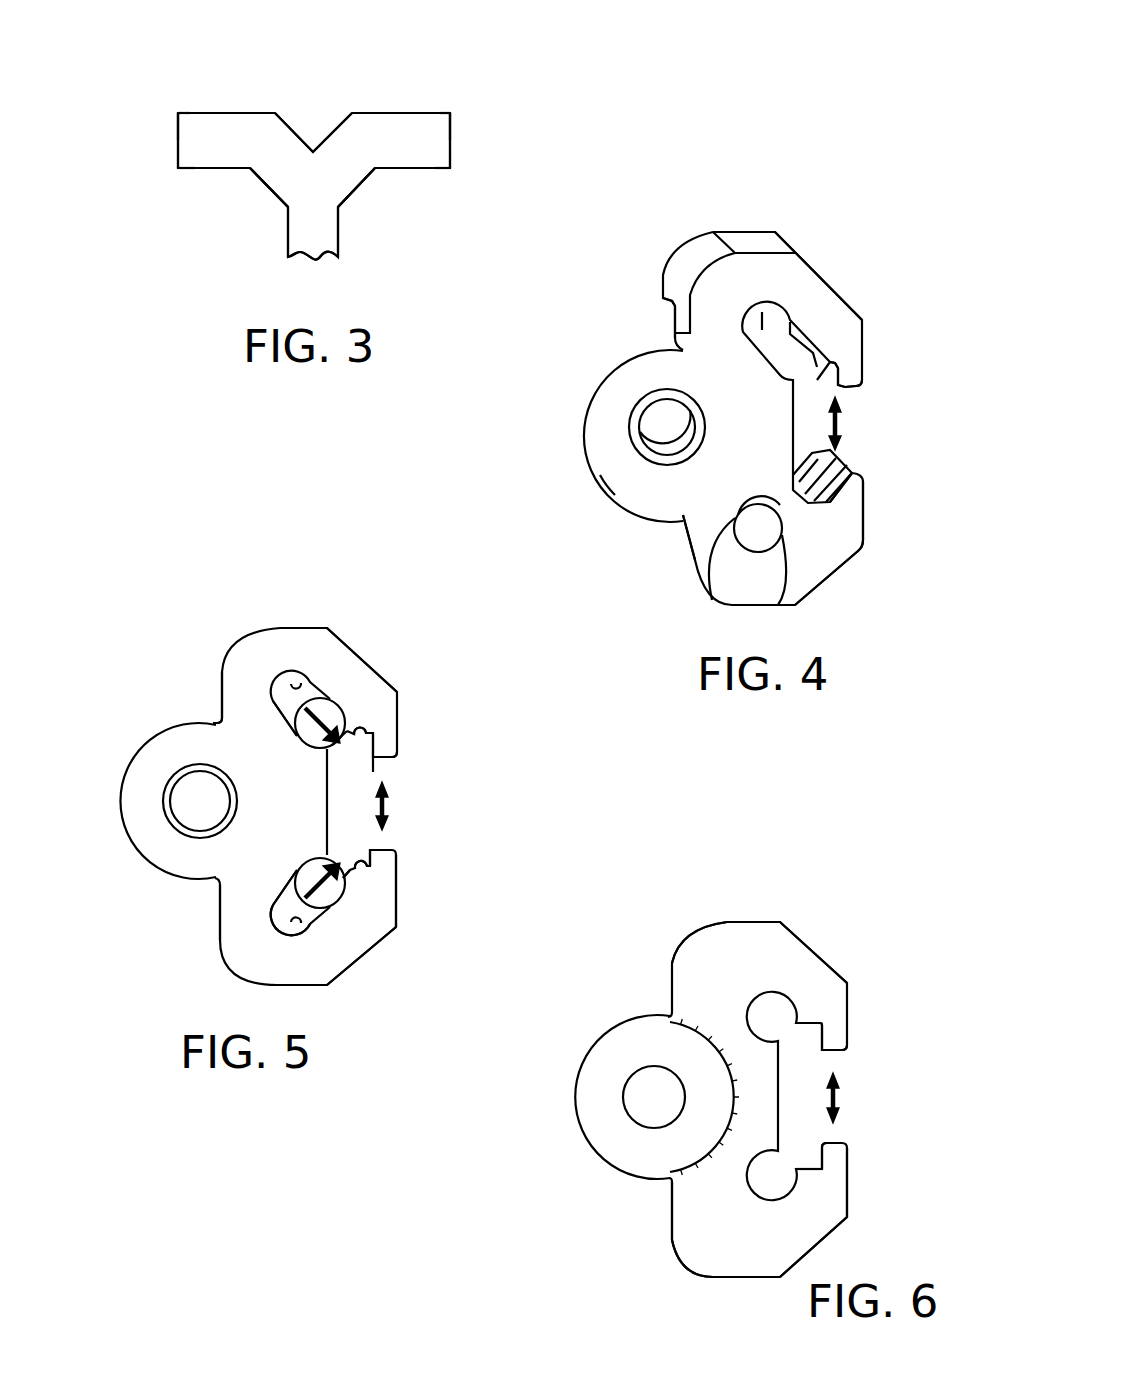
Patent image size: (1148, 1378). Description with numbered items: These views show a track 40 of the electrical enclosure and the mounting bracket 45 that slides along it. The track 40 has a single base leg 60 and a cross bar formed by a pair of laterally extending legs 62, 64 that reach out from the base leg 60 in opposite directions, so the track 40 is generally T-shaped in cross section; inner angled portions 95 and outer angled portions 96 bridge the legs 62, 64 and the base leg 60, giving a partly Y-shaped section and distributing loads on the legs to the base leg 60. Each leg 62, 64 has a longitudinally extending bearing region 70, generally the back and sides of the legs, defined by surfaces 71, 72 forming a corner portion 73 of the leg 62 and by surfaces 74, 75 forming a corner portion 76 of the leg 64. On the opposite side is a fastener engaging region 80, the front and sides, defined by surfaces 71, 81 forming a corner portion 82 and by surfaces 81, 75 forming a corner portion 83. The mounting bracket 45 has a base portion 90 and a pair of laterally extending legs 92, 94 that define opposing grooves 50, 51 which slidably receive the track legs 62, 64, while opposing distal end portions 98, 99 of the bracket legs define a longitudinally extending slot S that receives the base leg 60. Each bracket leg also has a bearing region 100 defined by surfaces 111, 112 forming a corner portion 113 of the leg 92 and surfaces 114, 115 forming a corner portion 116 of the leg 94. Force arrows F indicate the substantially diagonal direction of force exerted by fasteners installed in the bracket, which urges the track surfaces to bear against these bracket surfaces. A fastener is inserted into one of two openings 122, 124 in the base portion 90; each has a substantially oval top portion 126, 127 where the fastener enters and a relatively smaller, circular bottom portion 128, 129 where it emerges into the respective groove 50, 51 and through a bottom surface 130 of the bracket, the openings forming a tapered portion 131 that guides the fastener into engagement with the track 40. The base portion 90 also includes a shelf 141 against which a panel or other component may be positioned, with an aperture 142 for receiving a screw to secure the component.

In FIG. 3, the track 40 is at (333, 70).
In FIG. 3, the fastener engaging region 80 is at (213, 60).
In FIG. 3, the outer angled portions 96 is at (328, 128).
In FIG. 6, the outer angled portions 96 is at (815, 1145).
In FIG. 3, the surface 81 is at (213, 113).
In FIG. 3, the corner portion 82 is at (179, 106).
In FIG. 3, the corner portion 83 is at (455, 104).
In FIG. 3, the laterally extending leg 62 is at (178, 142).
In FIG. 3, the laterally extending leg 64 is at (436, 139).
In FIG. 3, the surface 71 is at (180, 150).
In FIG. 3, the surface 75 is at (452, 153).
In FIG. 3, the corner portion 73 is at (175, 180).
In FIG. 3, the corner portion 76 is at (458, 180).
In FIG. 3, the surface 72 is at (198, 172).
In FIG. 3, the surface 74 is at (416, 170).
In FIG. 3, the bearing region 70 is at (229, 210).
In FIG. 3, the inner angled portions 95 is at (270, 190).
In FIG. 6, the inner angled portions 95 is at (815, 1055).
In FIG. 3, the base leg 60 is at (296, 242).
In FIG. 4, the mounting bracket 45 is at (845, 258).
In FIG. 5, the mounting bracket 45 is at (408, 618).
In FIG. 6, the mounting bracket 45 is at (743, 905).
In FIG. 4, the laterally extending leg 94 is at (840, 315).
In FIG. 5, the laterally extending leg 94 is at (323, 648).
In FIG. 6, the laterally extending leg 94 is at (820, 1222).
In FIG. 4, the laterally extending leg 92 is at (818, 567).
In FIG. 5, the laterally extending leg 92 is at (348, 950).
In FIG. 6, the laterally extending leg 92 is at (818, 967).
In FIG. 4, the opening 124 is at (678, 335).
In FIG. 5, the opening 124 is at (290, 680).
In FIG. 6, the opening 124 is at (770, 1170).
In FIG. 4, the bottom surface 130 is at (610, 370).
In FIG. 5, the bottom surface 130 is at (107, 795).
In FIG. 6, the bottom surface 130 is at (755, 1068).
In FIG. 4, the opening or aperture 142 is at (670, 450).
In FIG. 6, the opening or aperture 142 is at (635, 1095).
In FIG. 4, the shelf 141 is at (627, 470).
In FIG. 4, the distal end portion 99 is at (852, 378).
In FIG. 5, the distal end portion 99 is at (385, 750).
In FIG. 6, the distal end portion 99 is at (845, 1040).
In FIG. 4, the groove 51 is at (822, 378).
In FIG. 5, the groove 51 is at (372, 763).
In FIG. 4, the slot S is at (843, 428).
In FIG. 5, the slot S is at (392, 815).
In FIG. 6, the slot S is at (843, 1097).
In FIG. 4, the distal end portion 98 is at (845, 480).
In FIG. 5, the distal end portion 98 is at (395, 865).
In FIG. 6, the distal end portion 98 is at (845, 1162).
In FIG. 4, the groove 50 is at (838, 492).
In FIG. 5, the groove 50 is at (372, 850).
In FIG. 4, the base portion 90 is at (672, 520).
In FIG. 5, the base portion 90 is at (183, 918).
In FIG. 6, the base portion 90 is at (668, 1203).
In FIG. 4, the opening 122 is at (720, 585).
In FIG. 5, the opening 122 is at (303, 928).
In FIG. 6, the opening 122 is at (758, 1003).
In FIG. 4, the bottom portion 128 is at (790, 540).
In FIG. 6, the bottom portion 128 is at (758, 1023).
In FIG. 4, the tapered portion 131 is at (782, 560).
In FIG. 5, the tapered portion 131 is at (275, 720).
In FIG. 5, the top portion 127 is at (270, 705).
In FIG. 5, the top portion 126 is at (300, 930).
In FIG. 5, the bearing region 100 is at (356, 776).
In FIG. 5, the force arrows F is at (320, 715).
In FIG. 5, the surface 115 is at (360, 732).
In FIG. 5, the surface 114 is at (376, 745).
In FIG. 5, the corner portion 116 is at (350, 750).
In FIG. 5, the corner portion 113 is at (350, 860).
In FIG. 5, the surface 112 is at (365, 885).
In FIG. 5, the surface 111 is at (350, 880).
In FIG. 6, the bottom portion 129 is at (760, 1195).